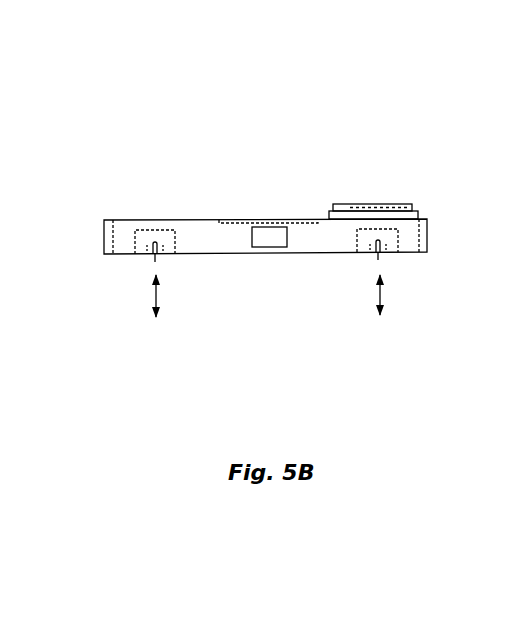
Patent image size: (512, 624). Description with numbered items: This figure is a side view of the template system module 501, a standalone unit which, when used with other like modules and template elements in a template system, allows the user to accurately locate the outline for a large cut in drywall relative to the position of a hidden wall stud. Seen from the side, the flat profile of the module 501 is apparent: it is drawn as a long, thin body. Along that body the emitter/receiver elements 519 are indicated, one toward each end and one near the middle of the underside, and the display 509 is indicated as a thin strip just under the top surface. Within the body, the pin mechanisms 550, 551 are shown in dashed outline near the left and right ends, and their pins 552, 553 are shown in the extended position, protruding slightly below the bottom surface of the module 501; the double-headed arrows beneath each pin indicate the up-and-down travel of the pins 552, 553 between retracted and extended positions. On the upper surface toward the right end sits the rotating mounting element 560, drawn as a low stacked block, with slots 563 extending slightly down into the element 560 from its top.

The module 501 is at (267, 104).
The display 509 is at (235, 222).
The emitter/receiver elements 519 is at (104, 235).
The pin mechanism 550 is at (355, 242).
The pin mechanism 551 is at (150, 230).
The pin 552 is at (378, 258).
The pin 553 is at (152, 260).
The rotating mounting element 560 is at (418, 211).
The slots 563 is at (367, 203).